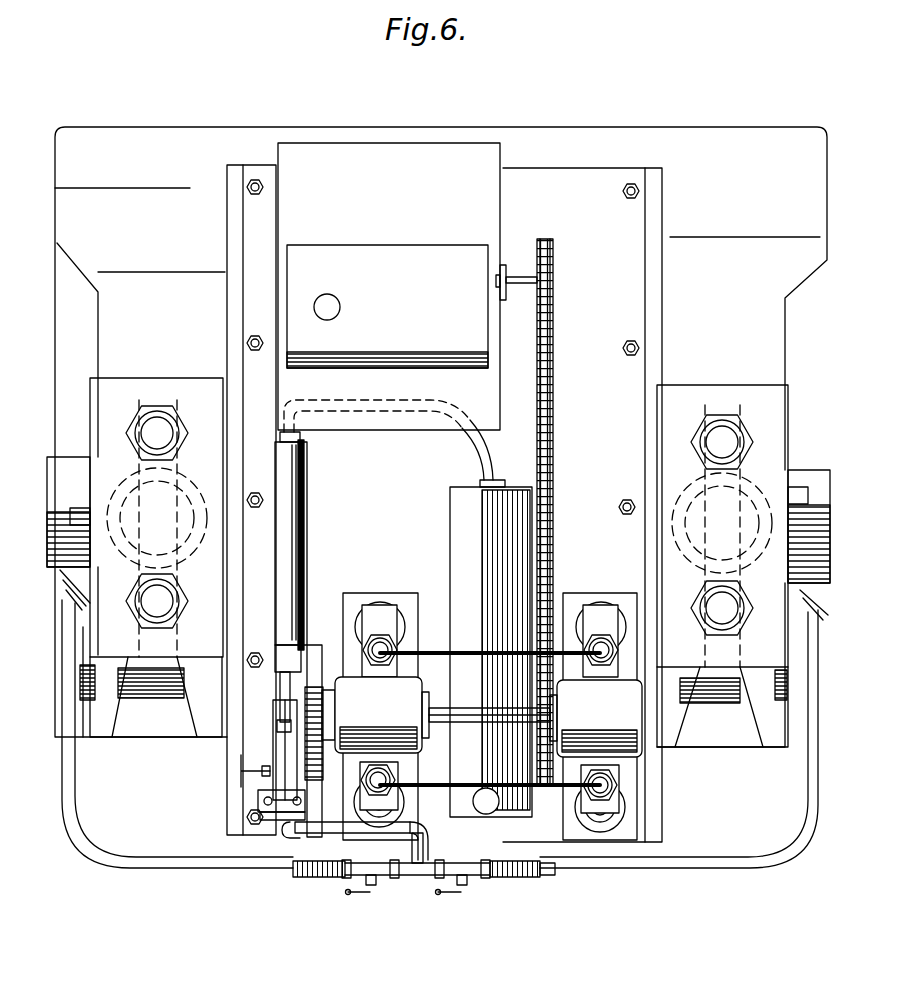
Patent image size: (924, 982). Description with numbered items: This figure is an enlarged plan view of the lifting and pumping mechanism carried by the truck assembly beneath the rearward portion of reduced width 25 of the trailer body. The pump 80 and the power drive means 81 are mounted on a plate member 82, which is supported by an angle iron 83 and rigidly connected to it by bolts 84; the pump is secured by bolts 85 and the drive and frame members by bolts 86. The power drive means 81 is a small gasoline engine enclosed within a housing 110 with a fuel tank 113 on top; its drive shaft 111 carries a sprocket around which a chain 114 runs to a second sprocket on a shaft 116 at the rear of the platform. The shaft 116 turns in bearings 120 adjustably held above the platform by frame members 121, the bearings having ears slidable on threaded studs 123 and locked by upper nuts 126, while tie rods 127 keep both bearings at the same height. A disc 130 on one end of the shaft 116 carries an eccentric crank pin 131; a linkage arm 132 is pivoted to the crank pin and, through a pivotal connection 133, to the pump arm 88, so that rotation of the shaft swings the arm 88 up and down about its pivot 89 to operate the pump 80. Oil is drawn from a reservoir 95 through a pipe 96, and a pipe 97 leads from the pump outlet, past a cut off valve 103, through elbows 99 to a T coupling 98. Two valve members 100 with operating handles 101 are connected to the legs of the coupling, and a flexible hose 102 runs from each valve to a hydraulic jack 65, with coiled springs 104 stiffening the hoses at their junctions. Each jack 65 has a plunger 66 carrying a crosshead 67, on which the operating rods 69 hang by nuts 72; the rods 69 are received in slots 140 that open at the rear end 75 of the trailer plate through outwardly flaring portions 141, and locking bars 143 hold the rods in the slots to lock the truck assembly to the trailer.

The portion of reduced width 25 is at (158, 128).
The plate member 82 is at (577, 175).
The angle iron 83 is at (655, 211).
The bolts 84 is at (629, 340).
The housing 110 is at (500, 207).
The fuel tank 113 is at (410, 255).
The drive shaft 111 is at (521, 273).
The power drive means 81 is at (556, 446).
The chain 114 is at (555, 526).
The pump 80 is at (307, 534).
The crank pin 131 is at (298, 642).
The linkage arm 132 is at (282, 695).
The pivotal connection 133 is at (277, 725).
The arm 88 is at (285, 750).
The cut off valve 103 is at (240, 771).
The pivot 89 is at (258, 798).
The frame members 121 is at (343, 645).
The disc 130 is at (323, 681).
The pipe 96 is at (468, 456).
The reservoir 95 is at (452, 540).
The crosshead 67 is at (132, 380).
The locking bars 143 is at (165, 700).
The outwardly flaring portions 141 is at (192, 735).
The rear end 75 is at (770, 748).
The nuts 72 is at (172, 425).
The operating rods 69 is at (170, 440).
The hydraulic jack 65 is at (135, 482).
The plunger 66 is at (186, 552).
The slots 140 is at (138, 510).
The coiled springs 104 is at (80, 588).
The flexible hose 102 is at (218, 870).
The bolts 86 is at (381, 605).
The upper nuts 126 is at (392, 640).
The studs 123 is at (396, 650).
The tie rods 127 is at (462, 652).
The bearings 120 is at (423, 689).
The shaft 116 is at (480, 724).
The pipe 97 is at (352, 833).
The elbows 99 is at (430, 832).
The bolts 85 is at (268, 822).
The T coupling 98 is at (417, 880).
The valve members 100 is at (384, 878).
The operating handles 101 is at (350, 895).